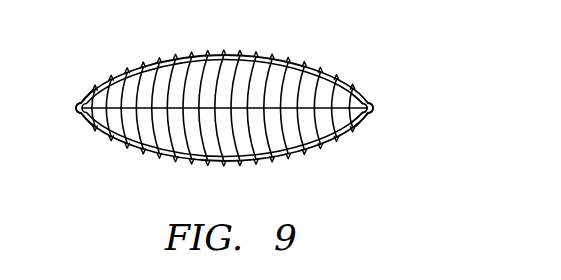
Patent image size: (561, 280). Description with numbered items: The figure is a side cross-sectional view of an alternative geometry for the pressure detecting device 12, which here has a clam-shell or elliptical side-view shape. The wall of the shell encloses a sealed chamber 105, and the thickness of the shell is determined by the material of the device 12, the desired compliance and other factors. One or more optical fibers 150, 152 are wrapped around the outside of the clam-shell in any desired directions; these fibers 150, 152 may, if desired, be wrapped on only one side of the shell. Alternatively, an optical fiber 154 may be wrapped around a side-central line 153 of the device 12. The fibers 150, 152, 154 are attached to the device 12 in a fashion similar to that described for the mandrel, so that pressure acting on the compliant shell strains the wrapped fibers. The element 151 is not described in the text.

The pressure detecting device 12 is at (105, 82).
The sealed chamber 105 is at (266, 145).
The optical fiber 150 is at (308, 148).
The inner frame distal tip 151 is at (362, 97).
The optical fiber 152 is at (328, 75).
The side-central line 153 is at (89, 118).
The optical fiber 154 is at (362, 119).